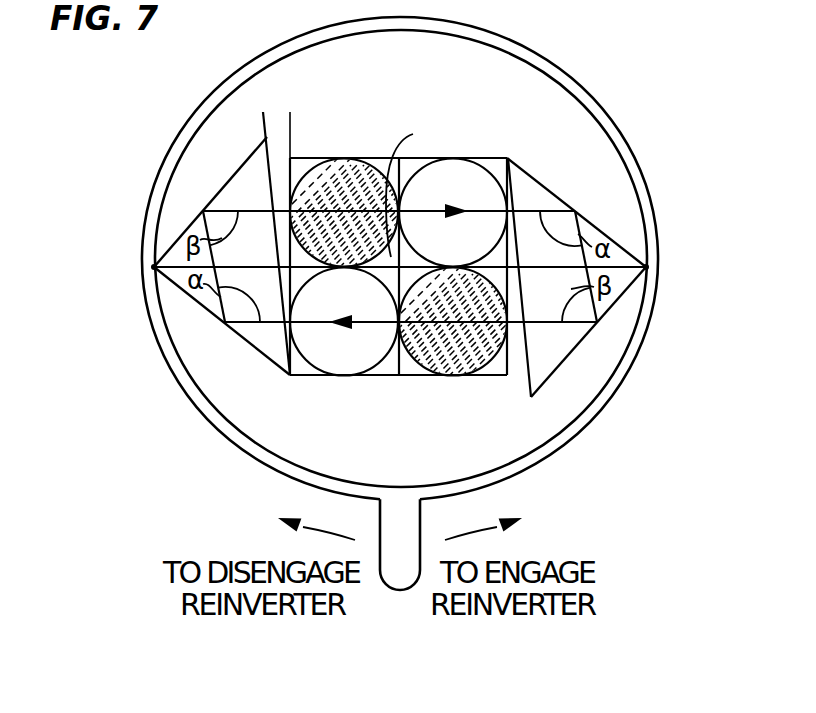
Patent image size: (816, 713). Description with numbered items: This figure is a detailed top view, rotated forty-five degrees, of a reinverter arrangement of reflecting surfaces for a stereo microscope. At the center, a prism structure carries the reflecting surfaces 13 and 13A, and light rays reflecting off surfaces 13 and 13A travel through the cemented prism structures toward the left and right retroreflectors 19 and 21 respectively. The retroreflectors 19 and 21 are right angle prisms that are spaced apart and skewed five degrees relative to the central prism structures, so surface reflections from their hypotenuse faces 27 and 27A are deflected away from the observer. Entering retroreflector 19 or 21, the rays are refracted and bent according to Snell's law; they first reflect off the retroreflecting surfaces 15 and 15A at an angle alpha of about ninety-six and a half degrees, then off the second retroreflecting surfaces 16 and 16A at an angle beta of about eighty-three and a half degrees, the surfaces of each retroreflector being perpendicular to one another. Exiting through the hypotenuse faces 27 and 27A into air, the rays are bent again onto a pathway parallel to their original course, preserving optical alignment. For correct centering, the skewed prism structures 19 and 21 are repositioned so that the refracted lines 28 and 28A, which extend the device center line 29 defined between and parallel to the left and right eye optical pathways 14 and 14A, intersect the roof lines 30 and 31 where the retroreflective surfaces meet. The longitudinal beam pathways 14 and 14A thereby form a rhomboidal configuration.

The reflecting surface 13 is at (360, 203).
The reflecting surface 13A is at (476, 315).
The left eye optical pathway 14 is at (418, 211).
The right eye optical pathway 14A is at (316, 322).
The retroreflecting surface 15 is at (576, 212).
The retroreflecting surface 15A is at (222, 322).
The retroreflecting surface 16 is at (588, 332).
The retroreflecting surface 16A is at (210, 202).
The left retroreflector 19 is at (263, 205).
The right retroreflector 21 is at (540, 208).
The hypotenuse face 27 is at (522, 375).
The hypotenuse face 27A is at (290, 122).
The refracted line 28 is at (266, 262).
The refracted line 28A is at (559, 266).
The device center line 29 is at (415, 189).
The roof line 30 is at (154, 268).
The roof line 31 is at (648, 268).